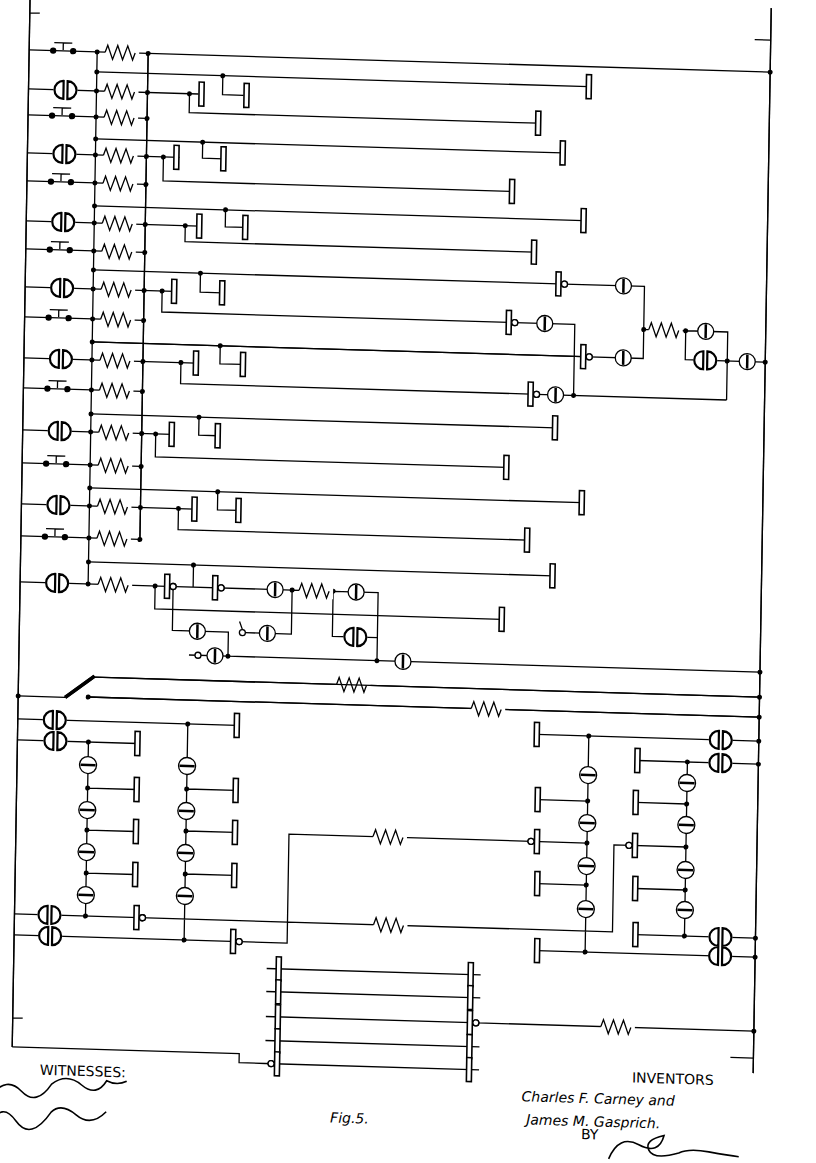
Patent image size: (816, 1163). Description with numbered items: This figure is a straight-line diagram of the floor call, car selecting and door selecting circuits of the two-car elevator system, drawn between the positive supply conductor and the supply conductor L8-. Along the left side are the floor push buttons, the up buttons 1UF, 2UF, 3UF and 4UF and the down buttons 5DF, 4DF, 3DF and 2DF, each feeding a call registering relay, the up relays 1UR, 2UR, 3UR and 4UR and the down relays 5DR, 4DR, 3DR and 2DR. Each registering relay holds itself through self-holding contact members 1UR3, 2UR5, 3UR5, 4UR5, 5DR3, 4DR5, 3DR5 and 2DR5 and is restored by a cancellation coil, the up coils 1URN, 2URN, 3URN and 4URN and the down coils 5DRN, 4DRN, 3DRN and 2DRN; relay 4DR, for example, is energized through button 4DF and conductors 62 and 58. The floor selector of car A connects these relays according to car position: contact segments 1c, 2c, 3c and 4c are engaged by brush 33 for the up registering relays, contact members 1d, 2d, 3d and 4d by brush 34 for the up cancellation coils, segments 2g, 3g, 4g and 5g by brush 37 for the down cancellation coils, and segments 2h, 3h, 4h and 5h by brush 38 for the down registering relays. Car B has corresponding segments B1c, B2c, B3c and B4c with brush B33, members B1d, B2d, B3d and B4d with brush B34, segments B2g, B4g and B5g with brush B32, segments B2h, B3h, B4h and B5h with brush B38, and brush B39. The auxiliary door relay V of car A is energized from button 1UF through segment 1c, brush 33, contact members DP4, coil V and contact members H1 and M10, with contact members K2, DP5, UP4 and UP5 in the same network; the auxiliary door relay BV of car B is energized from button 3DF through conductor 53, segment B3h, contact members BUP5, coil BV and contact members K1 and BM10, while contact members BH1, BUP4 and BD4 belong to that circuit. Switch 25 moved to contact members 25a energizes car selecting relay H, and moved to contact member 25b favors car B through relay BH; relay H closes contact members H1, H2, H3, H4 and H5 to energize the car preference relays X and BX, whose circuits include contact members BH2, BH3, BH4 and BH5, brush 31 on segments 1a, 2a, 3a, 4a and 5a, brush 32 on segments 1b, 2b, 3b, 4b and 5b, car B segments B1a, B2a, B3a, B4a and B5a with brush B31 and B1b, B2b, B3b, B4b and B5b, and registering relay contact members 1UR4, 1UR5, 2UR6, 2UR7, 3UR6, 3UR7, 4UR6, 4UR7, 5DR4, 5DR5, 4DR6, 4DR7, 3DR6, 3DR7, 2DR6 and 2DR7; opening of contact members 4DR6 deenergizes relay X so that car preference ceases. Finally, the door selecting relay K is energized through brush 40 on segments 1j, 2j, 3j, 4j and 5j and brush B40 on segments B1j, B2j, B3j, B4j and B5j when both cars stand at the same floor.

The down call push button (fifth floor) 5DF is at (66, 38).
The down call registering relay (fifth floor) 5DR is at (126, 38).
The self-holding contact members of relay 5DR 5DR3 is at (74, 81).
The down cancellation coil (fifth floor) 5DRN is at (118, 86).
The up call push button (fourth floor) 4UF is at (75, 105).
The up call registering relay (fourth floor) 4UR is at (121, 108).
The conductor 62 is at (151, 125).
The self-holding contact members of relay 4UR 4UR5 is at (75, 147).
The up cancellation coil (fourth floor) 4URN is at (117, 150).
The down call push button (fourth floor) 4DF is at (74, 170).
The down call registering relay (fourth floor) 4DR is at (120, 174).
The self-holding contact members of relay 4DR 4DR5 is at (75, 215).
The down cancellation coil (fourth floor) 4DRN is at (116, 218).
The up call push button (third floor) 3UF is at (71, 238).
The up call registering relay (third floor) 3UR is at (119, 241).
The self-holding contact members of relay 3UR 3UR5 is at (75, 281).
The up cancellation coil (third floor) 3URN is at (114, 284).
The down call push button (third floor) 3DF is at (69, 307).
The down call registering relay (third floor) 3DR is at (117, 310).
The self-holding contact members of relay 3DR 3DR5 is at (75, 352).
The down cancellation coil (third floor) 3DRN is at (112, 355).
The up call push button (second floor) 2UF is at (68, 376).
The up call registering relay (second floor) 2UR is at (115, 380).
The self-holding contact members of relay 2UR 2UR5 is at (75, 425).
The up cancellation coil (second floor) 2URN is at (112, 428).
The down call push button (second floor) 2DF is at (67, 450).
The down call registering relay (second floor) 2DR is at (114, 454).
The self-holding contact members of relay 2DR 2DR5 is at (74, 498).
The down cancellation coil (second floor) 2DRN is at (109, 501).
The up call push button (first floor) 1UF is at (63, 524).
The up call registering relay (first floor) 1UR is at (111, 527).
The self-holding contact members of relay 1UR 1UR3 is at (75, 575).
The up cancellation coil (first floor) 1URN is at (108, 577).
The contact segment 5g is at (211, 98).
The contact segment 5h is at (251, 88).
The contact member 4d is at (186, 155).
The contact segment 4c is at (229, 152).
The contact segment 4g is at (209, 224).
The contact segment 4h is at (252, 220).
The contact member 3d is at (183, 289).
The contact segment 3c is at (230, 286).
The contact segment 3g is at (205, 361).
The contact segment 3h is at (252, 357).
The contact member 2d is at (181, 432).
The contact segment 2c is at (228, 429).
The contact segment 2g is at (204, 507).
The contact segment 2h is at (250, 503).
The conductor 53 is at (178, 338).
The conductor 58 is at (392, 49).
The contact member 1d is at (173, 582).
The brush 34 is at (182, 596).
The contact segment 1c is at (222, 583).
The brush 33 is at (228, 597).
The contact members of down preference relay DP4 is at (287, 573).
The auxiliary door relay (car A) V is at (325, 575).
The contact members of door selecting relay K K2 is at (368, 577).
The contact members of car selecting relay H H1 is at (366, 620).
The contact members of down preference relay DP5 is at (212, 620).
The contact members of up preference relay UP4 is at (283, 620).
The brush 38 is at (245, 643).
The brush 37 is at (200, 652).
The contact members of up preference relay UP5 is at (231, 656).
The contact members of relay M M10 is at (417, 646).
The car selecting relay (car A) H is at (364, 669).
The switch 25 is at (68, 684).
The contact members of switch 25 25a is at (94, 672).
The contact member of switch 25 25b is at (94, 694).
The car selecting relay (car B) BH is at (505, 687).
The contact segment (car B selector) B5h is at (593, 69).
The contact segment (car B selector) B5g is at (543, 107).
The contact segment (car B selector) B4c is at (568, 136).
The contact member (car B selector) B4d is at (518, 176).
The contact segment (car B selector) B4h is at (590, 203).
The contact segment (car B selector) B4g is at (534, 234).
The contact segment (car B selector) B3c is at (555, 268).
The brush (car B) B33 is at (570, 263).
The contact members of up preference relay (car B) BUP4 is at (630, 256).
The contact member (car B selector) B3d is at (508, 305).
The brush (car B) B34 is at (519, 304).
The contact members of down preference relay (car B) BD4 is at (556, 305).
The contact segment (car B selector) B3h is at (590, 329).
The contact members of up preference relay (car B) BUP5 is at (629, 331).
The brush (car B) B38 is at (596, 342).
The auxiliary door relay (car B) BV is at (670, 304).
The contact members of door selecting relay K K1 is at (711, 306).
The contact members of car selecting relay BH BH1 is at (706, 347).
The contact members of relay BM (car B) BM10 is at (755, 332).
The brush (car B) B32 is at (532, 370).
The brush (car B) B39 is at (532, 390).
The contact segment (car B selector) B2c is at (565, 411).
The contact member (car B selector) B2d is at (506, 448).
The contact segment (car B selector) B2h is at (593, 485).
The contact segment (car B selector) B2g is at (539, 524).
The contact segment (car B selector) B1c is at (565, 559).
The contact member (car B selector) B1d is at (515, 604).
The contact members of car selecting relay BH BH2 is at (76, 714).
The contact members of car selecting relay H H2 is at (73, 737).
The contact segment 5a is at (146, 741).
The contact segment 5b is at (246, 722).
The contact members of relay 4UR 4UR6 is at (108, 766).
The contact members of relay 4UR 4UR7 is at (207, 767).
The contact segment 4a is at (145, 787).
The contact segment 4b is at (245, 788).
The contact members of relay 3UR 3UR6 is at (108, 810).
The contact members of relay 3UR 3UR7 is at (207, 811).
The contact segment 3a is at (144, 829).
The contact segment 3b is at (244, 830).
The contact members of relay 2UR 2UR6 is at (107, 852).
The contact members of relay 2UR 2UR7 is at (206, 853).
The contact segment 2a is at (144, 872).
The contact segment 2b is at (244, 873).
The contact members of relay 1UR 1UR4 is at (106, 895).
The contact members of relay 1UR 1UR5 is at (205, 896).
The contact members of car selecting relay BH BH4 is at (63, 906).
The contact segment 1a is at (141, 912).
The brush 31 is at (159, 917).
The contact members of car selecting relay H H4 is at (70, 930).
The contact segment 1b is at (244, 940).
The brush 32 is at (257, 932).
The car preference relay (car B) BX is at (404, 814).
The car preference relay (car A) X is at (405, 903).
The contact segment (car B selector) B5b is at (546, 720).
The contact members of relay 5DR 5DR4 is at (592, 758).
The contact segment (car B selector) B4b is at (548, 788).
The contact members of relay 4DR 4DR6 is at (570, 822).
The contact segment (car B selector) B3b is at (546, 819).
The contact members of relay 3DR 3DR6 is at (570, 865).
The contact segment (car B selector) B2b is at (549, 872).
The contact members of relay 2DR 2DR6 is at (592, 891).
The contact segment (car B selector) B1b is at (556, 942).
The contact segment (car B selector) B5a is at (653, 738).
The contact members of car selecting relay BH BH3 is at (726, 715).
The contact members of car selecting relay H H3 is at (729, 764).
The contact members of relay 5DR 5DR5 is at (707, 783).
The contact segment (car B selector) B4a is at (652, 780).
The contact members of relay 4DR 4DR7 is at (707, 825).
The brush (car B) B31 is at (640, 822).
The contact segment (car B selector) B3a is at (652, 823).
The contact members of relay 3DR 3DR7 is at (706, 870).
The contact segment (car B selector) B2a is at (653, 866).
The contact members of relay 2DR 2DR7 is at (705, 910).
The contact segment (car B selector) B1a is at (654, 912).
The contact members of car selecting relay BH BH5 is at (740, 907).
The contact members of car selecting relay H H5 is at (730, 942).
The contact segment 5j is at (262, 968).
The contact segment 4j is at (262, 991).
The contact segment 3j is at (262, 1016).
The contact segment 2j is at (261, 1040).
The contact segment 1j is at (277, 1071).
The brush 40 is at (286, 1058).
The contact segment (car B selector) B5j is at (490, 960).
The contact segment (car B selector) B4j is at (490, 983).
The contact segment (car B selector) B3j is at (496, 996).
The brush (car B) B40 is at (500, 1007).
The contact segment (car B selector) B2j is at (490, 1032).
The contact segment (car B selector) B1j is at (490, 1055).
The door selecting relay K is at (637, 1003).
The supply conductor L8- is at (729, 539).